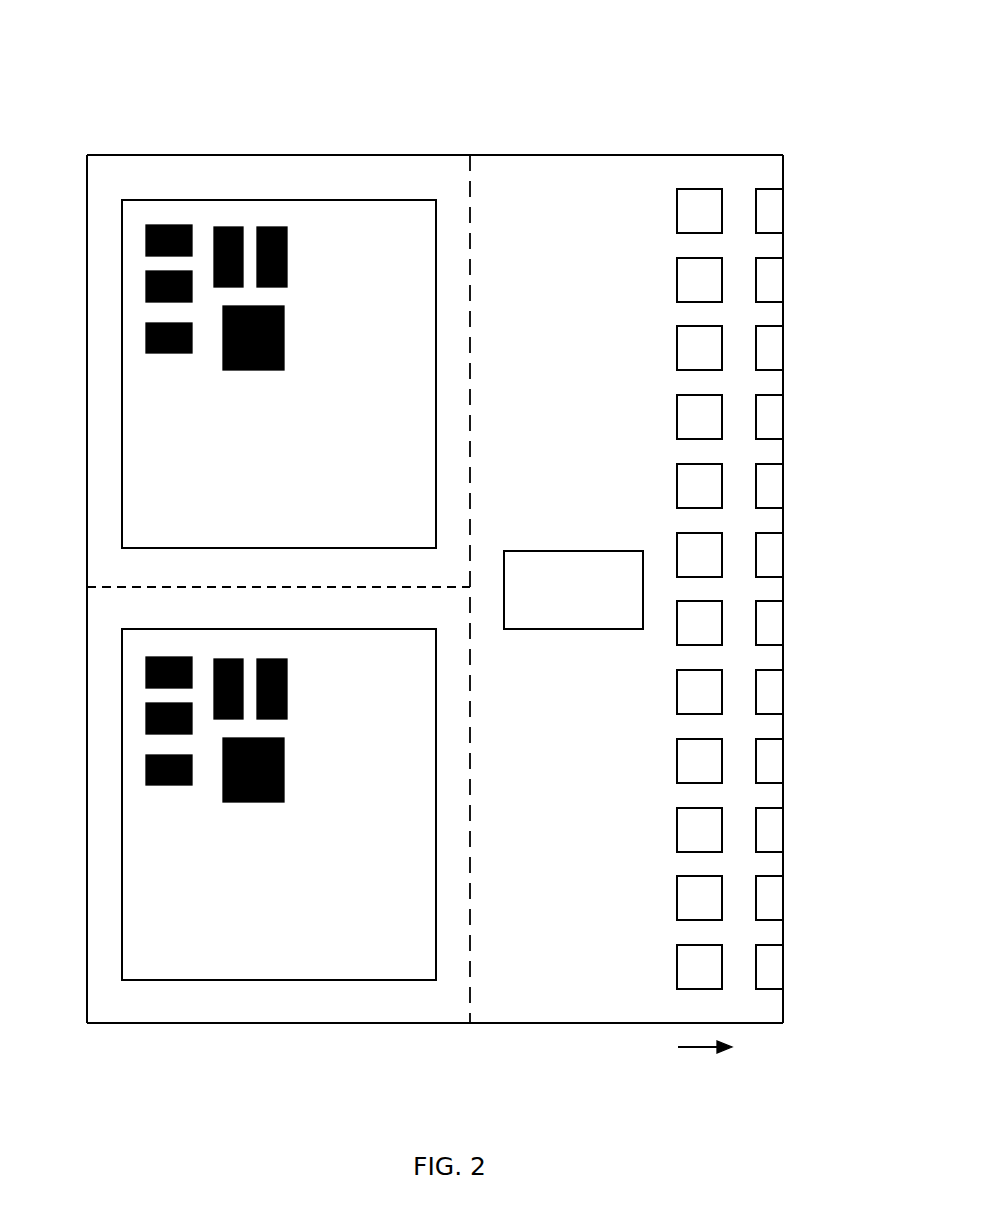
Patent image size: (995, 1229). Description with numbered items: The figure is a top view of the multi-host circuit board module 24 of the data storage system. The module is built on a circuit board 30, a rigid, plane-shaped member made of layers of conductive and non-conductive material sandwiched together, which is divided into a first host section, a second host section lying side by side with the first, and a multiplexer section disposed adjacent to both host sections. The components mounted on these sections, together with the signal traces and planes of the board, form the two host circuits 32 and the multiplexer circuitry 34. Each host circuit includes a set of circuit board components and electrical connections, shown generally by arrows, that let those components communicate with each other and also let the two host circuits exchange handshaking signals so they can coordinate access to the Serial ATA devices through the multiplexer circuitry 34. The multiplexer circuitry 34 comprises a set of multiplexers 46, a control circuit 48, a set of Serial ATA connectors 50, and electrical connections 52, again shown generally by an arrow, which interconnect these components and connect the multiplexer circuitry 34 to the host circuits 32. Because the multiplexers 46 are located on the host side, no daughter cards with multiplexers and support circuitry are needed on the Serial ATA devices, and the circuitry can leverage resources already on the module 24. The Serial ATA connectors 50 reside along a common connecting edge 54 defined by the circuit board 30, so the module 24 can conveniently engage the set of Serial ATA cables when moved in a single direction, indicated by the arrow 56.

The circuit board module 24 is at (80, 82).
The circuit board 30 is at (202, 142).
The host circuits 32 is at (100, 553).
The multiplexer circuitry 34 is at (550, 185).
The multiplexers 46 is at (575, 255).
The control circuit 48 is at (631, 613).
The Serial ATA connectors 50 is at (747, 158).
The electrical connections 52 is at (548, 385).
The common connecting edge 54 is at (786, 516).
The arrow 56 is at (693, 1047).